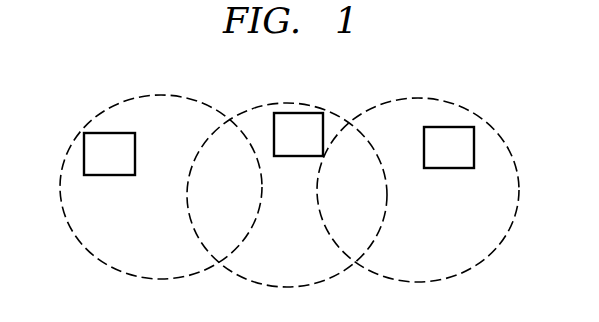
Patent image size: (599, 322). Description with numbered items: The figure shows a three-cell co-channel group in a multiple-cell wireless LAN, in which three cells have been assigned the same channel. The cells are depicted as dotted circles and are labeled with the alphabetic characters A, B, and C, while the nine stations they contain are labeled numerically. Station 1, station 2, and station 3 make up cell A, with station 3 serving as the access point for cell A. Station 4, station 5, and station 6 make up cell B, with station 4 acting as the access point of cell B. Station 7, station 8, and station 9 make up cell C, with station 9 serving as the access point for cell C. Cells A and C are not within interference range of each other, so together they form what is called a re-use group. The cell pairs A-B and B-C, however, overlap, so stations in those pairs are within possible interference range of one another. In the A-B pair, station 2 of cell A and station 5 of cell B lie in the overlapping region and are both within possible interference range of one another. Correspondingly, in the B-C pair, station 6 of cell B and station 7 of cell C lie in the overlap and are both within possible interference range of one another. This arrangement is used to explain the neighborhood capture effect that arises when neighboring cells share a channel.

The station 1 is at (161, 187).
The station 2 is at (229, 195).
The station 3 is at (126, 172).
The station 4 is at (287, 195).
The station 5 is at (270, 143).
The station 6 is at (355, 230).
The station 7 is at (355, 158).
The station 8 is at (418, 190).
The station 9 is at (440, 166).